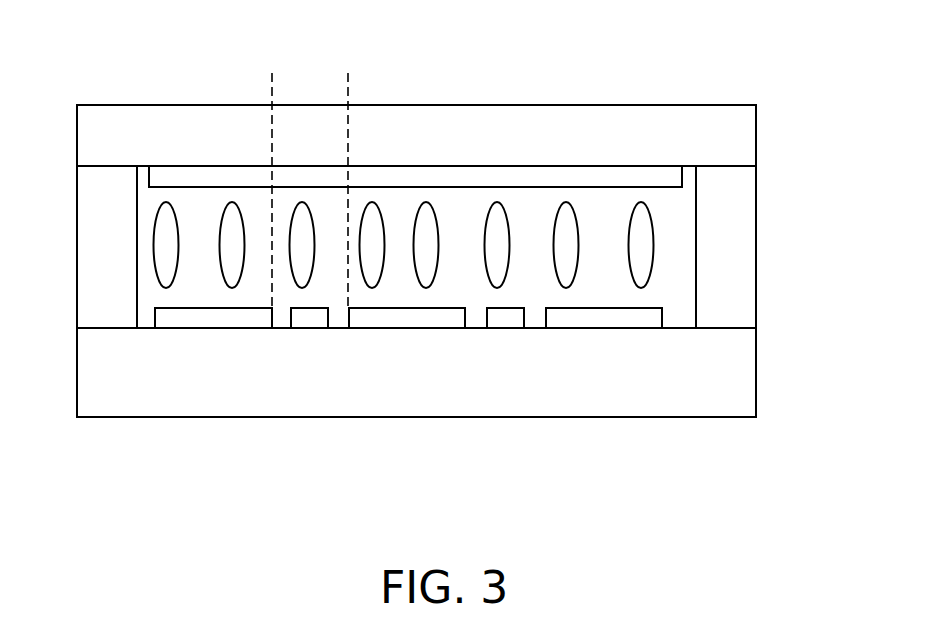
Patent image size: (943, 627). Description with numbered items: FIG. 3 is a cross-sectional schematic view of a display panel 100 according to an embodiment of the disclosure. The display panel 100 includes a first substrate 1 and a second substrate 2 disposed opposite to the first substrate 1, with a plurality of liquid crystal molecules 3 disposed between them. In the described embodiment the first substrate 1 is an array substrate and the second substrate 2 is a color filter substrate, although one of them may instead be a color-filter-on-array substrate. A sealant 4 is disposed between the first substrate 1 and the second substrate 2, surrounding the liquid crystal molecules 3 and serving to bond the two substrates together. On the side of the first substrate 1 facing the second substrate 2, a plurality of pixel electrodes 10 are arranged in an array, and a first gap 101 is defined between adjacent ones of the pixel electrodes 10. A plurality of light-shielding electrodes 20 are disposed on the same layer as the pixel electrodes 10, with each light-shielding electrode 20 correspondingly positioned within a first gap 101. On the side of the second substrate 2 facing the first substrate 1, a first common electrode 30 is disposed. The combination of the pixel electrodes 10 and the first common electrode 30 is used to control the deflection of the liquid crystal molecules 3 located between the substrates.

The display panel 100 is at (183, 85).
The first gap 101 is at (348, 84).
The first substrate 1 is at (705, 388).
The second substrate 2 is at (703, 129).
The liquid crystal molecules 3 is at (646, 249).
The sealant 4 is at (708, 300).
The pixel electrodes 10 is at (400, 313).
The light-shielding electrodes 20 is at (298, 313).
The first common electrode 30 is at (437, 183).